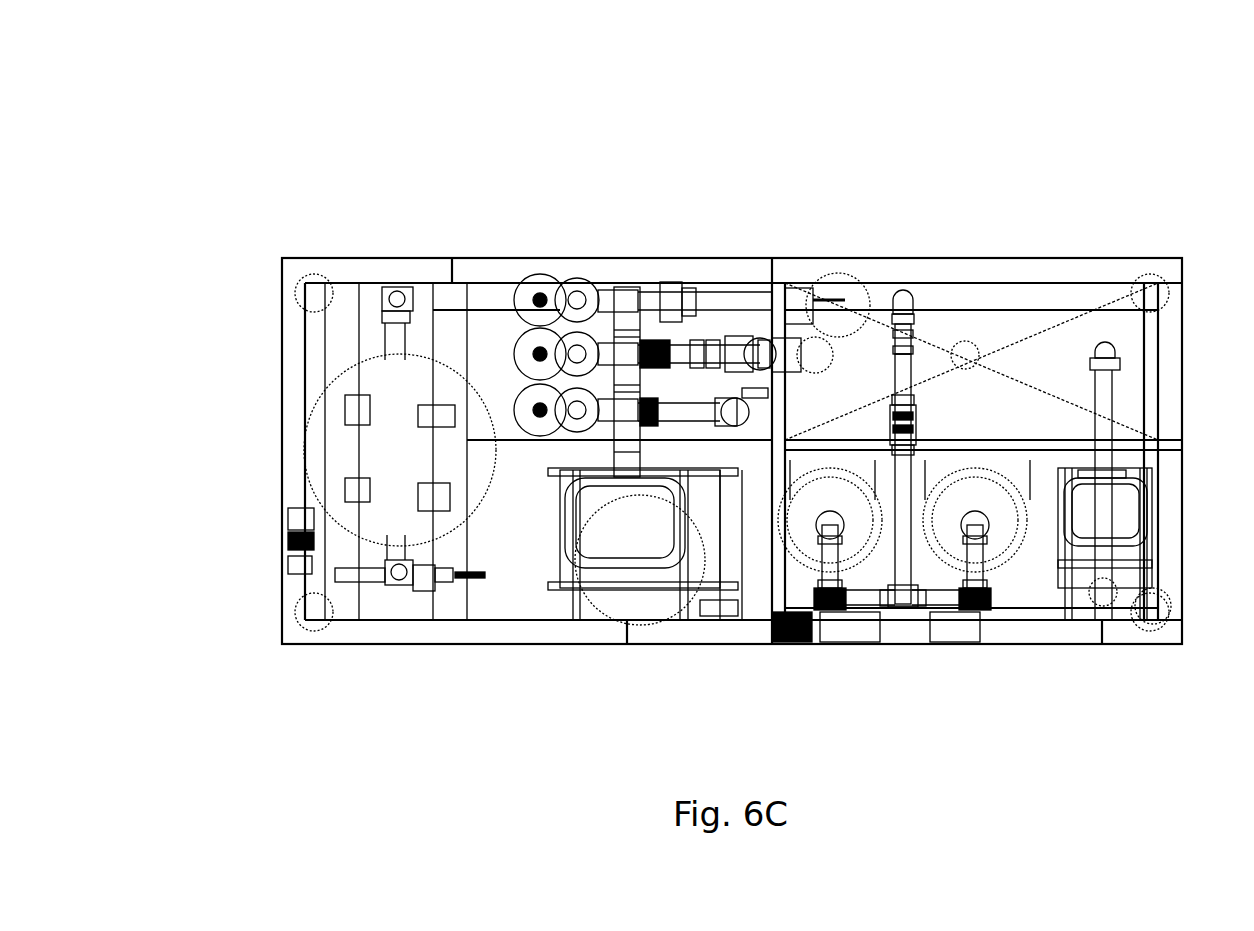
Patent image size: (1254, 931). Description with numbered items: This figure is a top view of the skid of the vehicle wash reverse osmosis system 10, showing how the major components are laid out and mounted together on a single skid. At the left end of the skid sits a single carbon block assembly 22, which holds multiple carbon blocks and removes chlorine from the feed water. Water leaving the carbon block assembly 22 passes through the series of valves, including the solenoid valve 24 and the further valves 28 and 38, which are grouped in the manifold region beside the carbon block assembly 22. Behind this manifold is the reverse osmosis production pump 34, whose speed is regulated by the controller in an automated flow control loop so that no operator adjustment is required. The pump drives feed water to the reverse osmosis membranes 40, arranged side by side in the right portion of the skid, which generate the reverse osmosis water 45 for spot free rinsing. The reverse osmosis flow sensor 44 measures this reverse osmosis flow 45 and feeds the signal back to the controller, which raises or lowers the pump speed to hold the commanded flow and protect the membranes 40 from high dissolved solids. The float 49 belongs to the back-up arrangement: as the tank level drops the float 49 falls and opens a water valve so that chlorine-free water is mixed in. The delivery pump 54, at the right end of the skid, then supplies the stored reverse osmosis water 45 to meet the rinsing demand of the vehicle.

The vehicle wash reverse osmosis system 10 is at (732, 162).
The carbon block assembly 22 is at (372, 451).
The solenoid valve 24 is at (564, 276).
The valve 28 is at (512, 398).
The reverse osmosis production pump 34 is at (604, 547).
The valve 38 is at (536, 326).
The reverse osmosis membrane filters 40 is at (855, 530).
The reverse osmosis flow sensor 44 is at (935, 425).
The reverse osmosis water 45 is at (922, 300).
The float 49 is at (854, 280).
The delivery pump 54 is at (1107, 545).